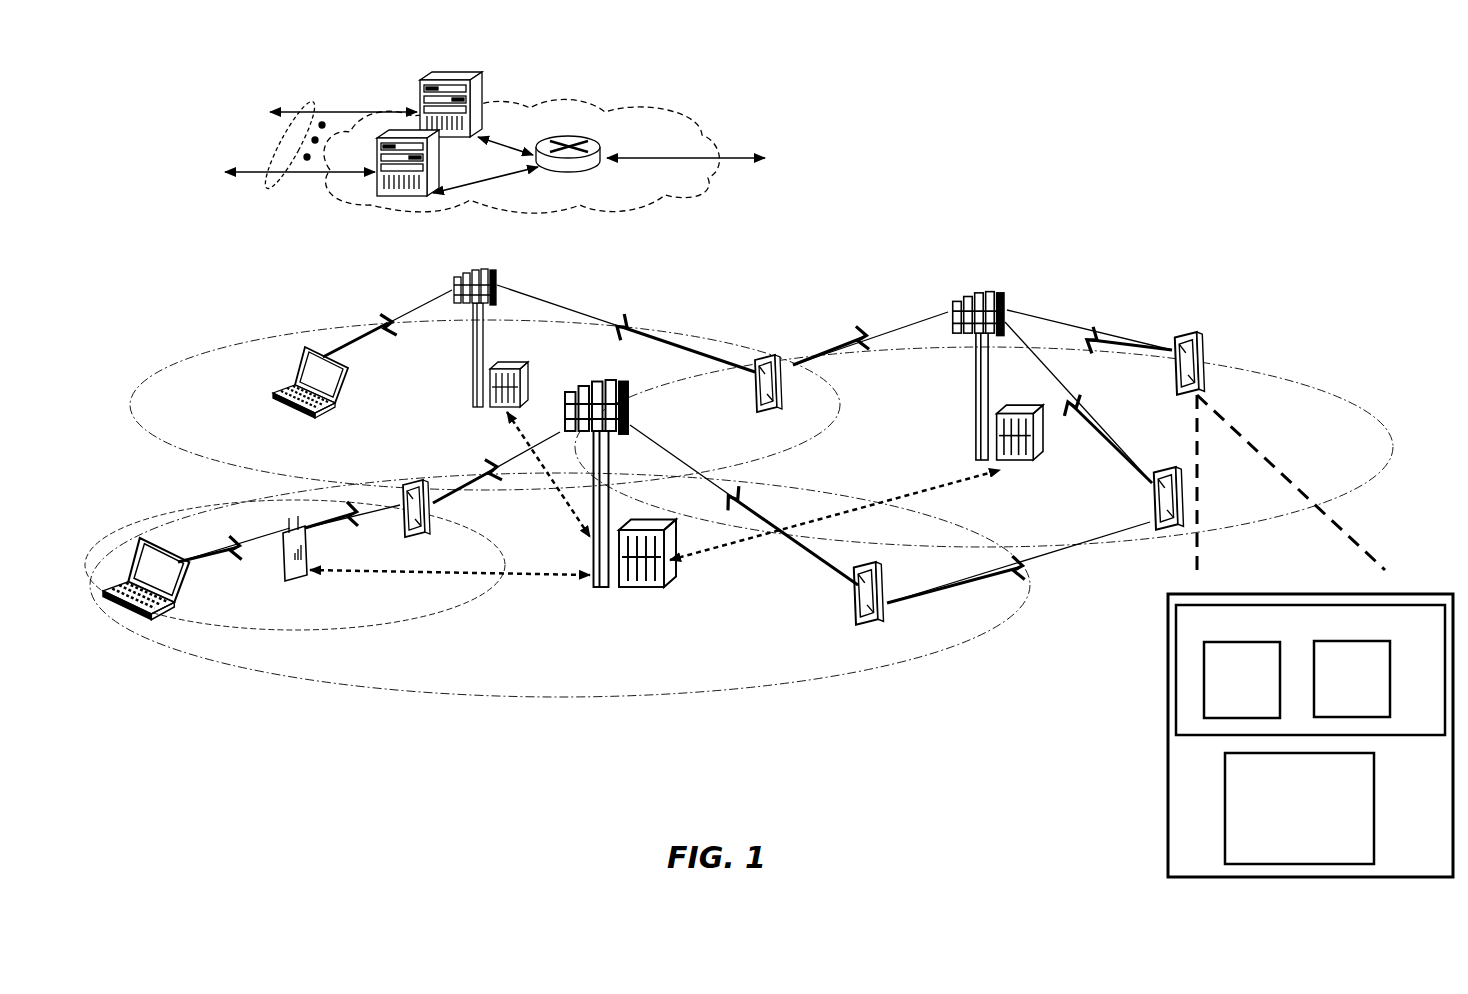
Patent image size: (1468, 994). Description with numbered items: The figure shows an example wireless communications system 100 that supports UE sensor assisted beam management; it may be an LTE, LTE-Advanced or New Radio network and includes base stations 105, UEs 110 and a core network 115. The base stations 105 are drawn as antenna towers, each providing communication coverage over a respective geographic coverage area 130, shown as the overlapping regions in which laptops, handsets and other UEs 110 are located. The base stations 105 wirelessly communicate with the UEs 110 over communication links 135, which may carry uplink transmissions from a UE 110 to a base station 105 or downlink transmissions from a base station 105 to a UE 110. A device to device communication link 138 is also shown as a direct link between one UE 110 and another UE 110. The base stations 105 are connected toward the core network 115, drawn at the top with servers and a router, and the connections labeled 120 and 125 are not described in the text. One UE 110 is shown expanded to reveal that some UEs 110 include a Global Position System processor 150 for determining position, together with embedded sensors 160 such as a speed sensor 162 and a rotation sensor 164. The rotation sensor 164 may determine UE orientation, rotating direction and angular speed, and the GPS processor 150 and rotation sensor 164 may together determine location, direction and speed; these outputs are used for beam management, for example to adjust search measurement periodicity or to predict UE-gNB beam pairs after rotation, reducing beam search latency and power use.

The wireless communications system 100 is at (216, 116).
The base station 105 is at (473, 382).
The UE 110 is at (323, 410).
The core network 115 is at (606, 212).
The backhaul link 120 is at (283, 178).
The inter-base-station backhaul link 125 is at (548, 500).
The geographic coverage area 130 is at (190, 457).
The communication link 135 is at (386, 316).
The device to device communication link 138 is at (1090, 546).
The Global Position System processor 150 is at (1299, 808).
The sensors 160 is at (1310, 670).
The speed sensor 162 is at (1242, 680).
The rotation sensor 164 is at (1352, 679).